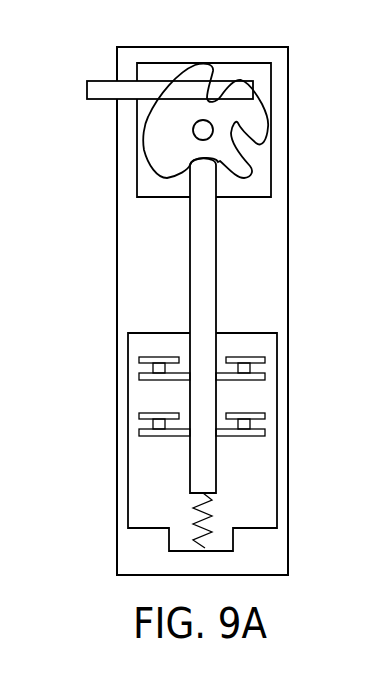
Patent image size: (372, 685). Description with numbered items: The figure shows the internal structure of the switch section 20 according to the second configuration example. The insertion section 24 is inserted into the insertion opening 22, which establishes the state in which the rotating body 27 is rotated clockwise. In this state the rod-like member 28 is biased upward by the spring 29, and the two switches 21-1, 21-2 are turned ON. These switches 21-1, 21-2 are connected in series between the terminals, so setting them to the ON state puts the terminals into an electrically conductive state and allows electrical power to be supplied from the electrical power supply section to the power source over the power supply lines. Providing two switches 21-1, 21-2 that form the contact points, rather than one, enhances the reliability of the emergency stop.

The switch section 20 is at (202, 47).
The switch 21-1 is at (127, 370).
The switch 21-2 is at (127, 426).
The insertion opening 22 is at (99, 119).
The insertion section 24 is at (103, 80).
The rotating body 27 is at (263, 104).
The rod-like member 28 is at (216, 262).
The spring 29 is at (207, 548).